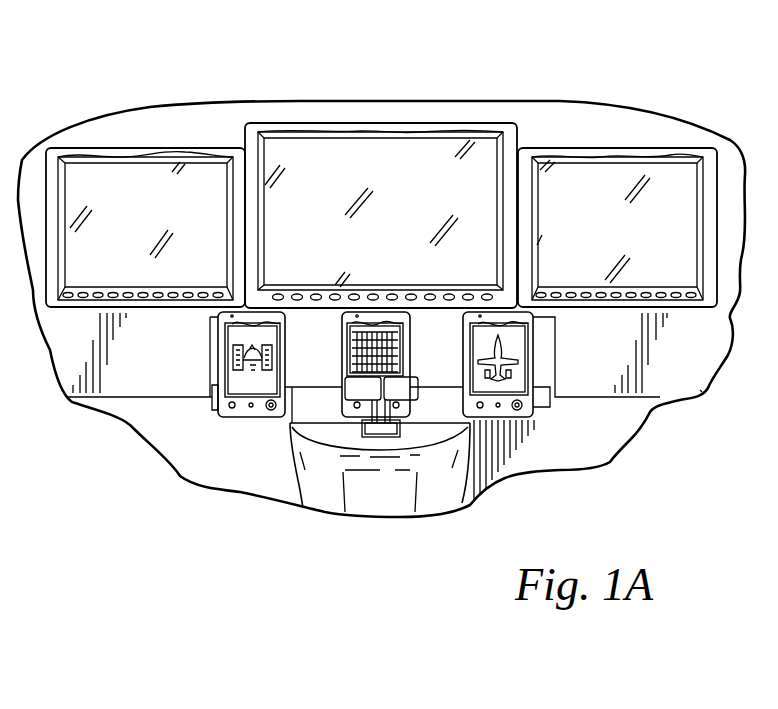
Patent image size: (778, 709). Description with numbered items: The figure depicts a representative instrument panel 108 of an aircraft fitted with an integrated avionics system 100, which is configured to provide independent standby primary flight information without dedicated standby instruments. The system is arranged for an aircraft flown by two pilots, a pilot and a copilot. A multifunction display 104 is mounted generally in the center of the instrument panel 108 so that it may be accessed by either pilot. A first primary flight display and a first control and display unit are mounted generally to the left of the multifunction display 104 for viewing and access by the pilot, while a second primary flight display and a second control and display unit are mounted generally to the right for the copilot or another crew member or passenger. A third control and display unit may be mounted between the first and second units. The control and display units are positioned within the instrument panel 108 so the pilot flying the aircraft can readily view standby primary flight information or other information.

The integrated avionics system 100 is at (623, 45).
The multifunction display 104 is at (395, 177).
The instrument panel 108 is at (672, 355).